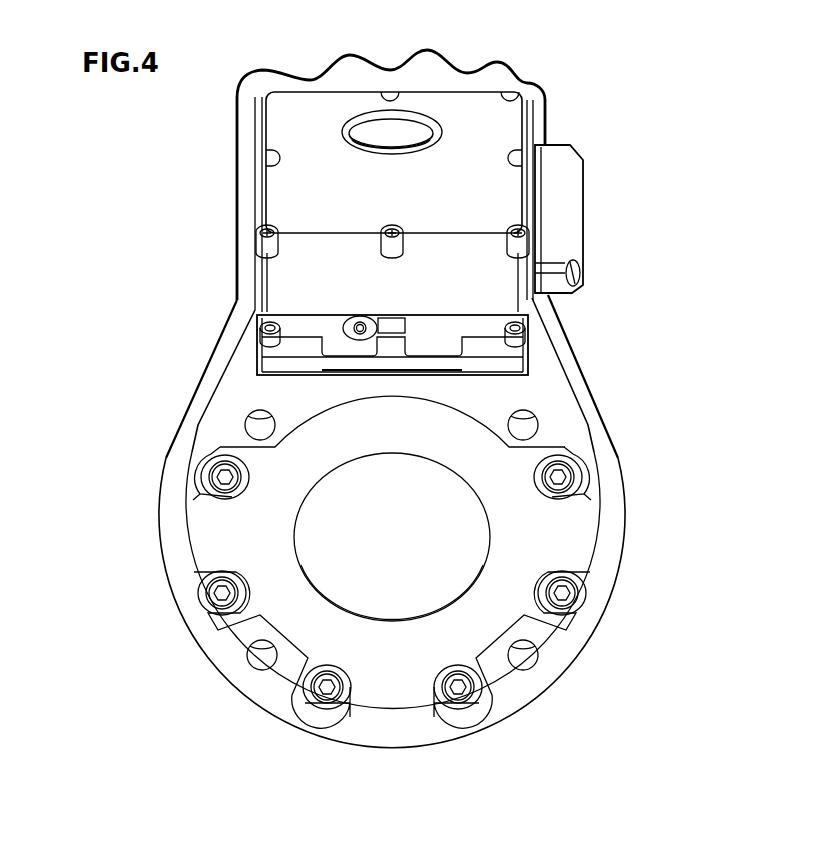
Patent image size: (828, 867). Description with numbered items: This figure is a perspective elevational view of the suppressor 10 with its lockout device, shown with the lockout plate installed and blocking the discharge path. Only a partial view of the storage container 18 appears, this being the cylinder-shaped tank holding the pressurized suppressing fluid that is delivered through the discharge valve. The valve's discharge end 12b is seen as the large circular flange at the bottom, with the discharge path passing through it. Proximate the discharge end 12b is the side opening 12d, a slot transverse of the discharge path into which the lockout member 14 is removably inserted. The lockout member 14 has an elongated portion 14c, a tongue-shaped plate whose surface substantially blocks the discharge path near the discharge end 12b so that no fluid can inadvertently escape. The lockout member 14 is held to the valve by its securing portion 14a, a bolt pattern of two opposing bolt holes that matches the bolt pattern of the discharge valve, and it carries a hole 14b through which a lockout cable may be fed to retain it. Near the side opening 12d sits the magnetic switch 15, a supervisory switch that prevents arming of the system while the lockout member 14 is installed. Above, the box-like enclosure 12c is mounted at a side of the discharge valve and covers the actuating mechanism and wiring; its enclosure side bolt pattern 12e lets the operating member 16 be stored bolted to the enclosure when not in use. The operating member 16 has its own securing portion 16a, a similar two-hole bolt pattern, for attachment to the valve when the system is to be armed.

The suppressor 10 is at (650, 160).
The discharge end 12b is at (430, 617).
The enclosure 12c is at (292, 178).
The side opening 12d is at (528, 376).
The enclosure side bolt pattern 12e is at (536, 192).
The lockout member 14 is at (305, 323).
The securing portion 14a is at (270, 332).
The hole 14b is at (408, 325).
The elongated portion 14c is at (328, 556).
The magnetic switch 15 is at (359, 322).
The operating member 16 is at (585, 213).
The securing portion 16a is at (575, 283).
The storage container 18 is at (545, 127).